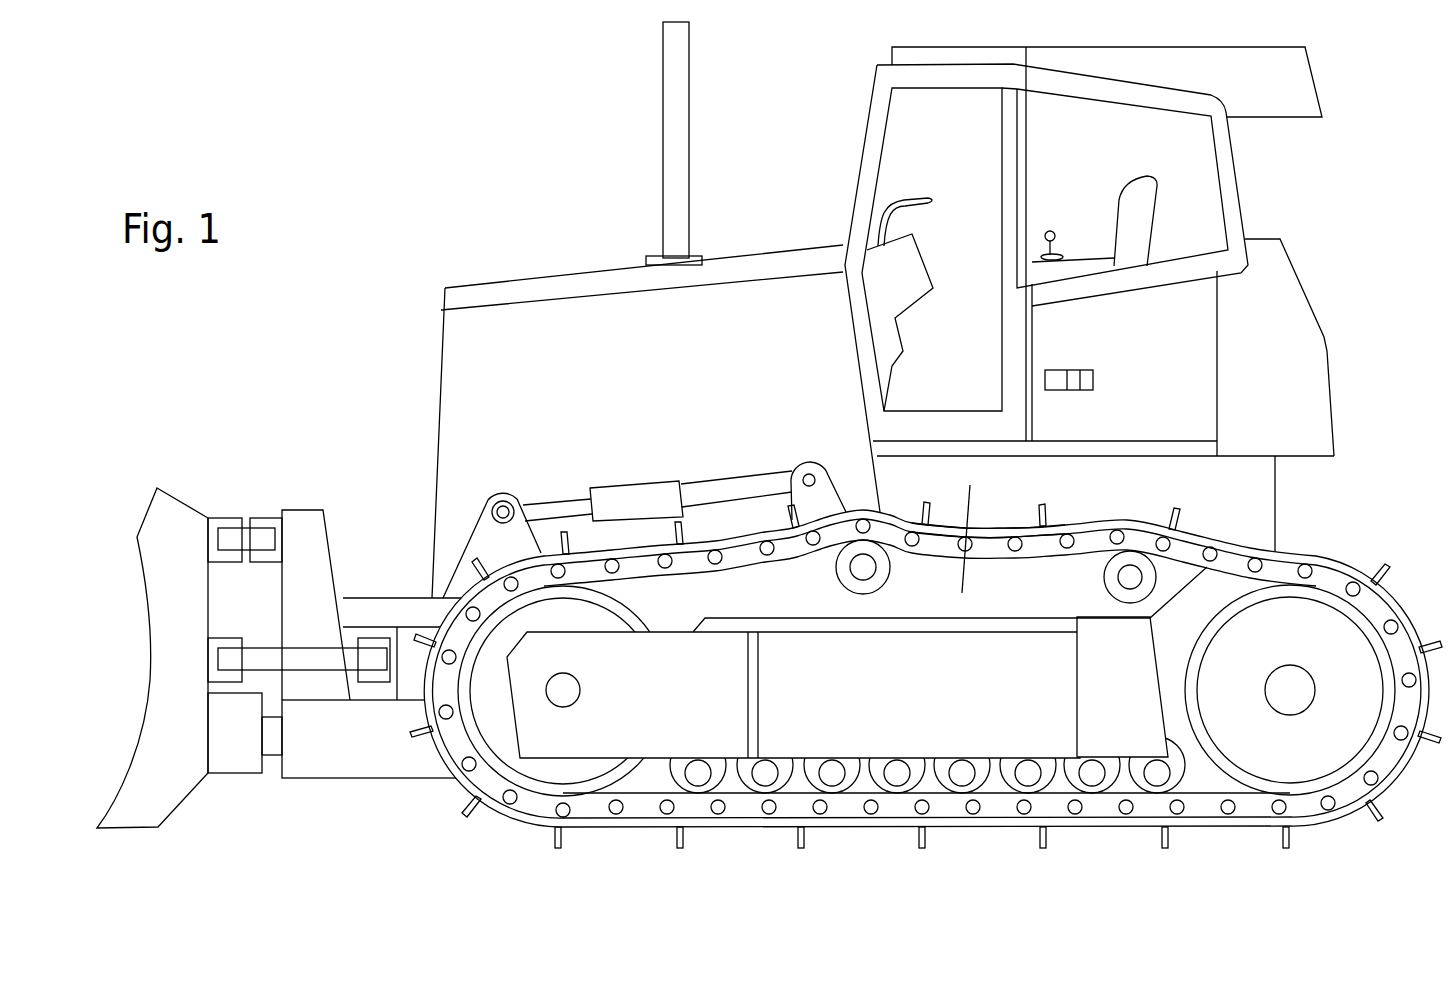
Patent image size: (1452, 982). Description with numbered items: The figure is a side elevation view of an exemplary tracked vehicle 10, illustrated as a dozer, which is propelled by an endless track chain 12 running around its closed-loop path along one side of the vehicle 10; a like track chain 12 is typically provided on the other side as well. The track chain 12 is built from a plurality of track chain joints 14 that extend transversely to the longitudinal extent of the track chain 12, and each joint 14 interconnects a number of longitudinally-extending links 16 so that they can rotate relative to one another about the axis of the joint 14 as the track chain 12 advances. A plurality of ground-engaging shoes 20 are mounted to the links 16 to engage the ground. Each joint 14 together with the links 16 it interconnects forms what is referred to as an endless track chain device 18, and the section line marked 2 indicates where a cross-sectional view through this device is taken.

The tracked vehicle 10 is at (452, 170).
The endless track chain 12 is at (1378, 518).
The track chain joint 14 is at (1023, 660).
The link 16 is at (993, 550).
The endless track chain device 18 is at (1040, 683).
The ground-engaging shoe 20 is at (678, 521).
The section line 2- 2 is at (990, 599).